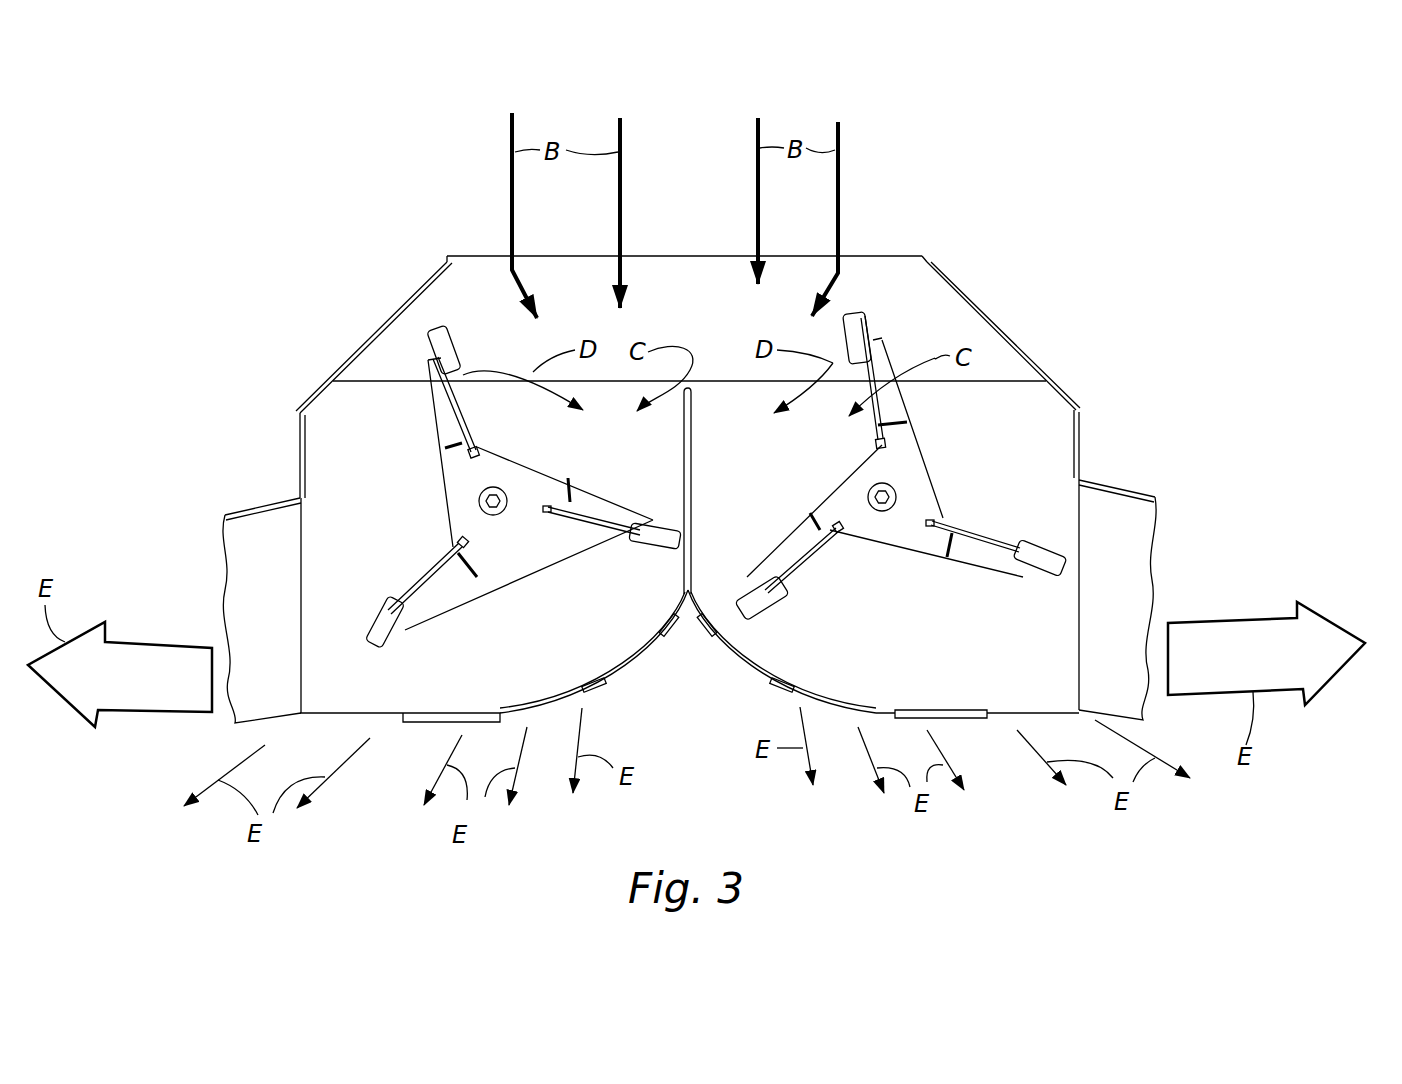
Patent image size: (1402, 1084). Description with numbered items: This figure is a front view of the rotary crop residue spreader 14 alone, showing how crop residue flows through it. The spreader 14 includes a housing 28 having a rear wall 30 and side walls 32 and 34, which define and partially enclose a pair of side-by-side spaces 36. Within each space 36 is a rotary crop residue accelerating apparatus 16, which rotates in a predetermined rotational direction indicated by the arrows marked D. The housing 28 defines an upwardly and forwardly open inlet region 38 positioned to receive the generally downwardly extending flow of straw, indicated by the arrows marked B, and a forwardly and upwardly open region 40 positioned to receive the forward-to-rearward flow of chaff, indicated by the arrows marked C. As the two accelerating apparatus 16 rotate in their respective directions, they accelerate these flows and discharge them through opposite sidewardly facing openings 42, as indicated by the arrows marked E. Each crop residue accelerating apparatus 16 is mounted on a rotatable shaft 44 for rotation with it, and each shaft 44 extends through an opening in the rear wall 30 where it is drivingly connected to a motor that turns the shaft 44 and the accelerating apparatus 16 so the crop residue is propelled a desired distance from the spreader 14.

The rotary crop residue spreader 14 is at (1078, 266).
The rotary crop residue accelerating apparatus 16 is at (513, 553).
The housing 28 is at (377, 334).
The rear wall 30 is at (922, 256).
The side wall 32 is at (300, 423).
The side wall 34 is at (1078, 447).
The side-by-side spaces 36 is at (335, 475).
The inlet region 38 is at (675, 282).
The forwardly and upwardly open region 40 is at (743, 466).
The sidewardly facing openings 42 is at (313, 587).
The rotatable shaft 44 is at (478, 503).